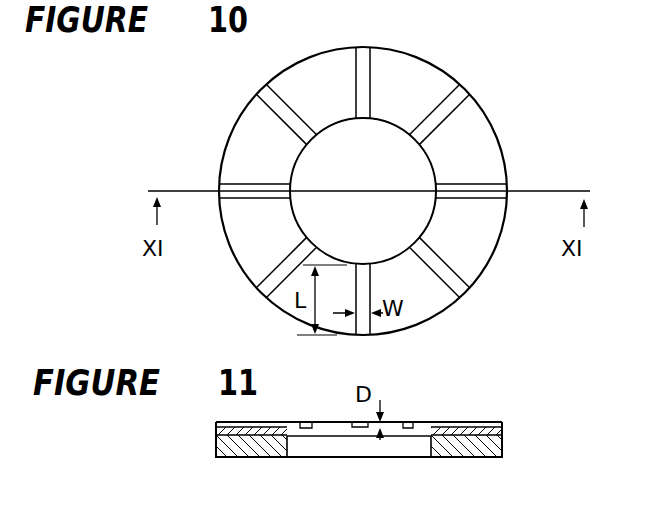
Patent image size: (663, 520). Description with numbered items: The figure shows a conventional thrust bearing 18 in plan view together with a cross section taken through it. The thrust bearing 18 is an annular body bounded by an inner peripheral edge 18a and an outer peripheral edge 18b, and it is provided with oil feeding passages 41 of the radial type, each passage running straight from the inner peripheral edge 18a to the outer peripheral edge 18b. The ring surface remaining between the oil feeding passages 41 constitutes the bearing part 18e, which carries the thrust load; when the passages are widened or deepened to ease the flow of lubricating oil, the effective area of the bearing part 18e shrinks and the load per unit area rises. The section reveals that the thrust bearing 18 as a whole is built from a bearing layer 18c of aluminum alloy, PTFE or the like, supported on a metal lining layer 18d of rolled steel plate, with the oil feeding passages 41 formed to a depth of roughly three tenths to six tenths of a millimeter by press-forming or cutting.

In FIG. 10, the thrust bearing 18 is at (496, 120).
In FIG. 10, the inner peripheral edge 18a is at (428, 167).
In FIG. 10, the outer peripheral edge 18b is at (493, 260).
In FIG. 11, the bearing layer 18c is at (477, 422).
In FIG. 11, the metal lining layer 18d is at (467, 457).
In FIG. 10, the bearing part 18e is at (417, 82).
In FIG. 10, the oil feeding passages 41 is at (448, 277).